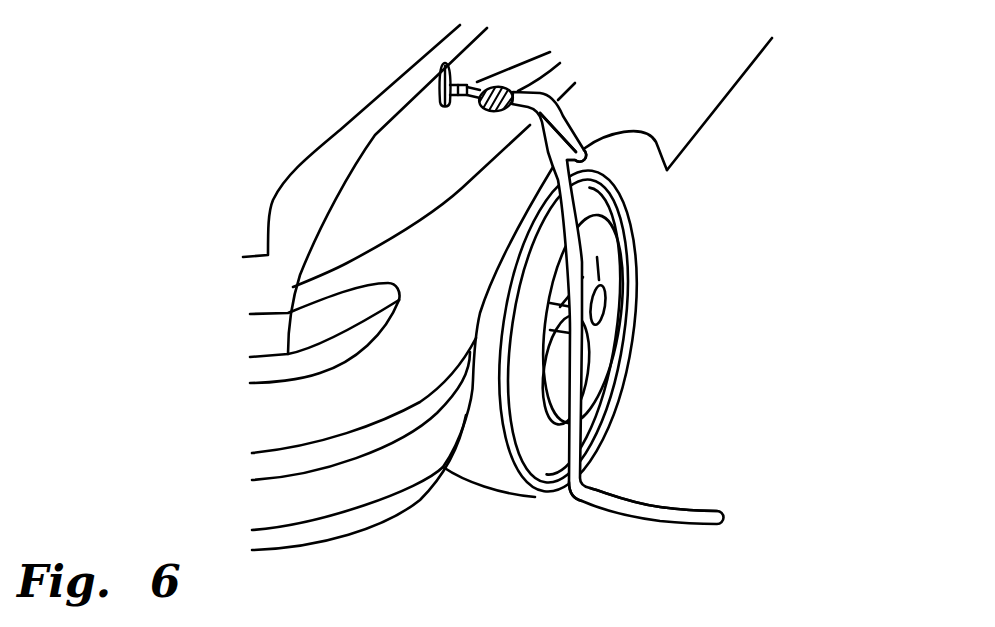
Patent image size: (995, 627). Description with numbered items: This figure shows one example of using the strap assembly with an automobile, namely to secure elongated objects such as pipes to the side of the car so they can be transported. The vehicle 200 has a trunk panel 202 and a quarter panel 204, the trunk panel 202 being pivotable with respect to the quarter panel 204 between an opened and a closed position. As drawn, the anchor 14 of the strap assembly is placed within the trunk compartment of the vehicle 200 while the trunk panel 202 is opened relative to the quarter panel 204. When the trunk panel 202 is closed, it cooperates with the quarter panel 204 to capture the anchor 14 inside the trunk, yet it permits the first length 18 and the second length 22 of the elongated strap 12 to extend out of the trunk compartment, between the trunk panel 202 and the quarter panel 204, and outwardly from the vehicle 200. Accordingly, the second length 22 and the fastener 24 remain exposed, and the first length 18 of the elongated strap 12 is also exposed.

The elongated strap 12 is at (550, 510).
The anchor 14 is at (476, 56).
The first length 18 is at (664, 492).
The second length 22 is at (599, 117).
The fastener 24 is at (608, 158).
The vehicle 200 is at (687, 258).
The trunk panel 202 is at (380, 66).
The quarter panel 204 is at (457, 173).